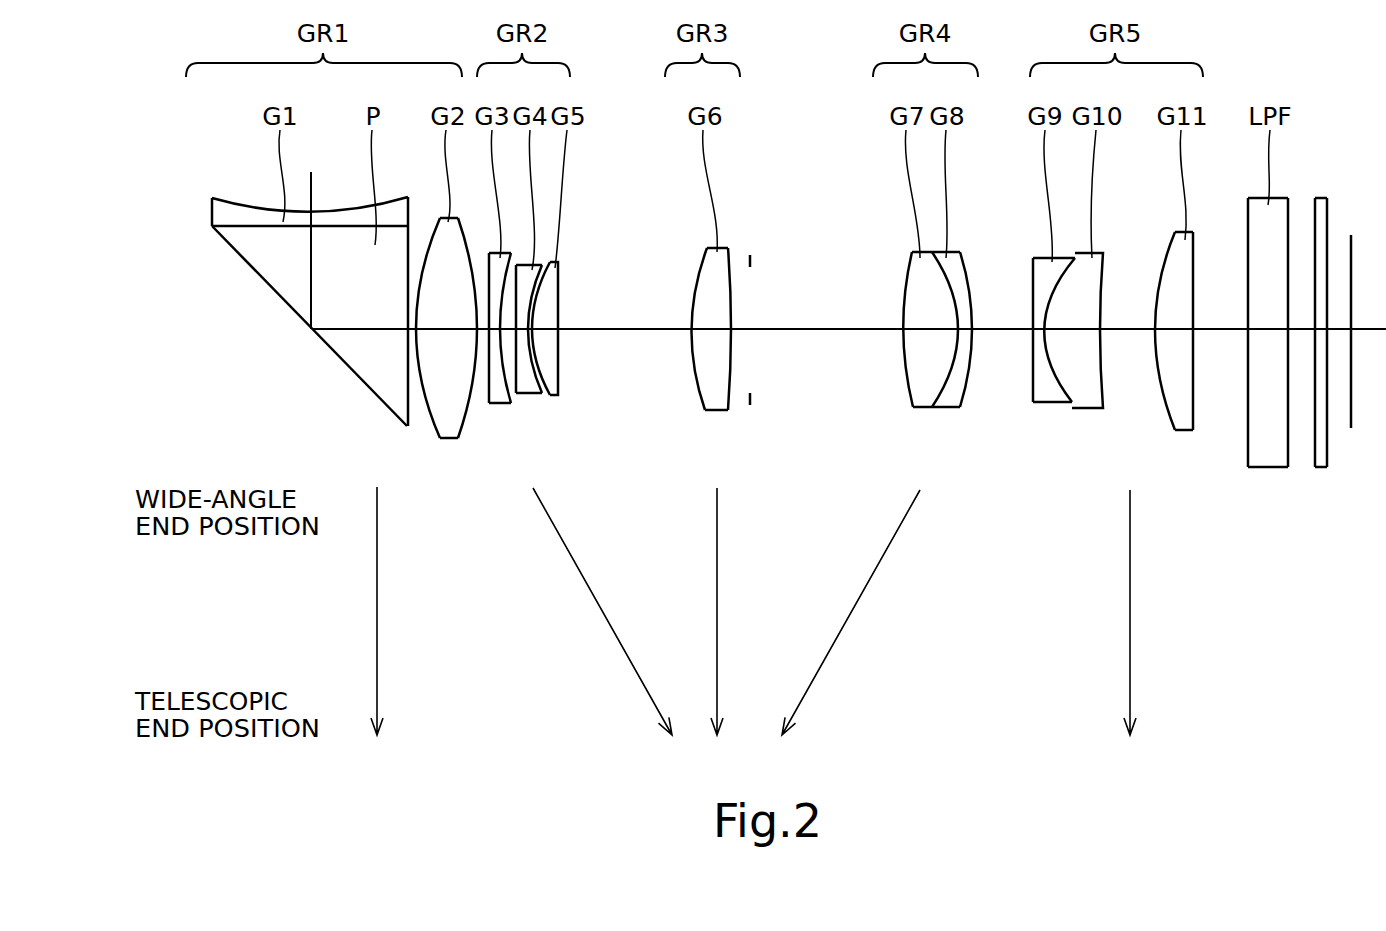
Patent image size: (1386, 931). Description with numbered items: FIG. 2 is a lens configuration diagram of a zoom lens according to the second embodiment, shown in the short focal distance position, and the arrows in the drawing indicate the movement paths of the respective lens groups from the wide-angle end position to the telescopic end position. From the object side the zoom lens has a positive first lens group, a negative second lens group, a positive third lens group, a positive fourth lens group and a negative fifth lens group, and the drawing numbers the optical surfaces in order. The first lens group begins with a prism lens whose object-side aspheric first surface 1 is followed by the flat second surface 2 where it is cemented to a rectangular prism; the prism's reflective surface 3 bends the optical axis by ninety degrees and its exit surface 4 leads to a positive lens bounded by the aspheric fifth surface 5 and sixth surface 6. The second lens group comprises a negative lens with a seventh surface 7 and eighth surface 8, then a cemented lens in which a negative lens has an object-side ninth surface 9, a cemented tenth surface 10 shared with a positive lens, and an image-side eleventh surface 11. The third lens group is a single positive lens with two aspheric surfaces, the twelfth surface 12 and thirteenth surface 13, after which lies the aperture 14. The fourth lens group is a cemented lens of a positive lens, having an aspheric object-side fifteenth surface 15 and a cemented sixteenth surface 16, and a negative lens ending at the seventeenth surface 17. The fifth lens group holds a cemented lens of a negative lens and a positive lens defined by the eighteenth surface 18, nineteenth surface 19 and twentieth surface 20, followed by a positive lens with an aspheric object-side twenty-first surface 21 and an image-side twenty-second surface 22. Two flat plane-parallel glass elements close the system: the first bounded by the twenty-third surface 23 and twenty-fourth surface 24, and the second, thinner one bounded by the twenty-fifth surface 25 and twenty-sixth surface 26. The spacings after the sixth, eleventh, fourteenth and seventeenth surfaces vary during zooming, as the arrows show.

The first surface 1 is at (242, 203).
The second surface 2 is at (245, 227).
The reflective surface 3 is at (350, 366).
The fourth surface 4 is at (410, 428).
The fifth surface 5 is at (432, 436).
The sixth surface 6 is at (462, 438).
The seventh surface 7 is at (487, 392).
The eighth surface 8 is at (500, 310).
The ninth surface 9 is at (512, 325).
The tenth surface 10 is at (538, 343).
The eleventh surface 11 is at (558, 378).
The twelfth surface 12 is at (698, 278).
The thirteenth surface 13 is at (728, 400).
The aperture 14 is at (752, 262).
The fifteenth surface 15 is at (906, 290).
The sixteenth surface 16 is at (932, 368).
The seventeenth surface 17 is at (968, 268).
The eighteenth surface 18 is at (1030, 292).
The nineteenth surface 19 is at (1058, 287).
The twentieth surface 20 is at (1103, 390).
The twenty-first surface 21 is at (1170, 412).
The twenty-second surface 22 is at (1195, 255).
The twenty-third surface 23 is at (1247, 433).
The twenty-fourth surface 24 is at (1288, 450).
The twenty-fifth surface 25 is at (1313, 450).
The twenty-sixth surface 26 is at (1328, 450).